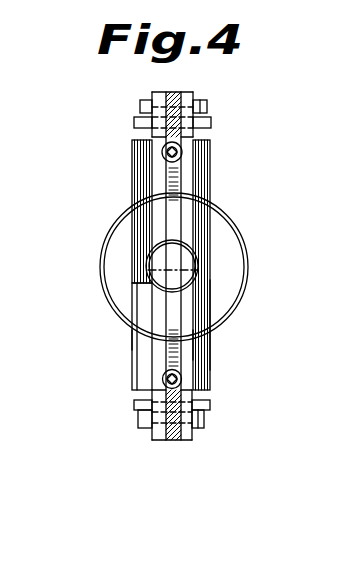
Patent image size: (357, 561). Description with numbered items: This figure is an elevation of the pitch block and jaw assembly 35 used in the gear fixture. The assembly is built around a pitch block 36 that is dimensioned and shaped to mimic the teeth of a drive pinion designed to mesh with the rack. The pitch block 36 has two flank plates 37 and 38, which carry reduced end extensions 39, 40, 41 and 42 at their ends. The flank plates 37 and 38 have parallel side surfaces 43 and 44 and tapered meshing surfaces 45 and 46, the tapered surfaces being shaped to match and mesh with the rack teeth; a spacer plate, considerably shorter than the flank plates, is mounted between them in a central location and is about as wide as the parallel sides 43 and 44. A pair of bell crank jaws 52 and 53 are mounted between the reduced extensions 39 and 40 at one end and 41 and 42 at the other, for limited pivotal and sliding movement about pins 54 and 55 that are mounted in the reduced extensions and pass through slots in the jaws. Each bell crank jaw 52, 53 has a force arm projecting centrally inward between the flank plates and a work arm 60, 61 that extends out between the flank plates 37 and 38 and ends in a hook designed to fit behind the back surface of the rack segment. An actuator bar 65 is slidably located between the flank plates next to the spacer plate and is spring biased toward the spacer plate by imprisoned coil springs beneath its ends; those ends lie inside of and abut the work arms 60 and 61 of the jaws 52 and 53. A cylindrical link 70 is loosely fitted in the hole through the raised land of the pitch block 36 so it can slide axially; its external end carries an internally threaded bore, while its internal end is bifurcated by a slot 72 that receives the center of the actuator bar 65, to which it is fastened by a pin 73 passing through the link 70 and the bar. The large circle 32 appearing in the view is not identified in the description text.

The wheel 32 is at (238, 226).
The pitch block and jaw assembly 35 is at (126, 393).
The pitch block 36 is at (214, 153).
The flank plate 37 is at (211, 170).
The flank plate 38 is at (132, 160).
The reduced end extension 39 is at (152, 92).
The reduced end extension 40 is at (193, 93).
The reduced end extension 41 is at (152, 440).
The reduced end extension 42 is at (190, 441).
The parallel side surface 43 is at (210, 348).
The parallel side surface 44 is at (132, 339).
The tapered meshing surface 45 is at (205, 292).
The tapered meshing surface 46 is at (137, 287).
The bell crank jaw 52 is at (173, 91).
The bell crank jaw 53 is at (173, 446).
The pin 54 is at (207, 108).
The pin 55 is at (204, 418).
The work arm 60 is at (135, 122).
The work arm 61 is at (167, 440).
The actuator bar 65 is at (170, 188).
The cylindrical link 70 is at (197, 262).
The slot 72 is at (190, 283).
The pin 73 is at (200, 253).